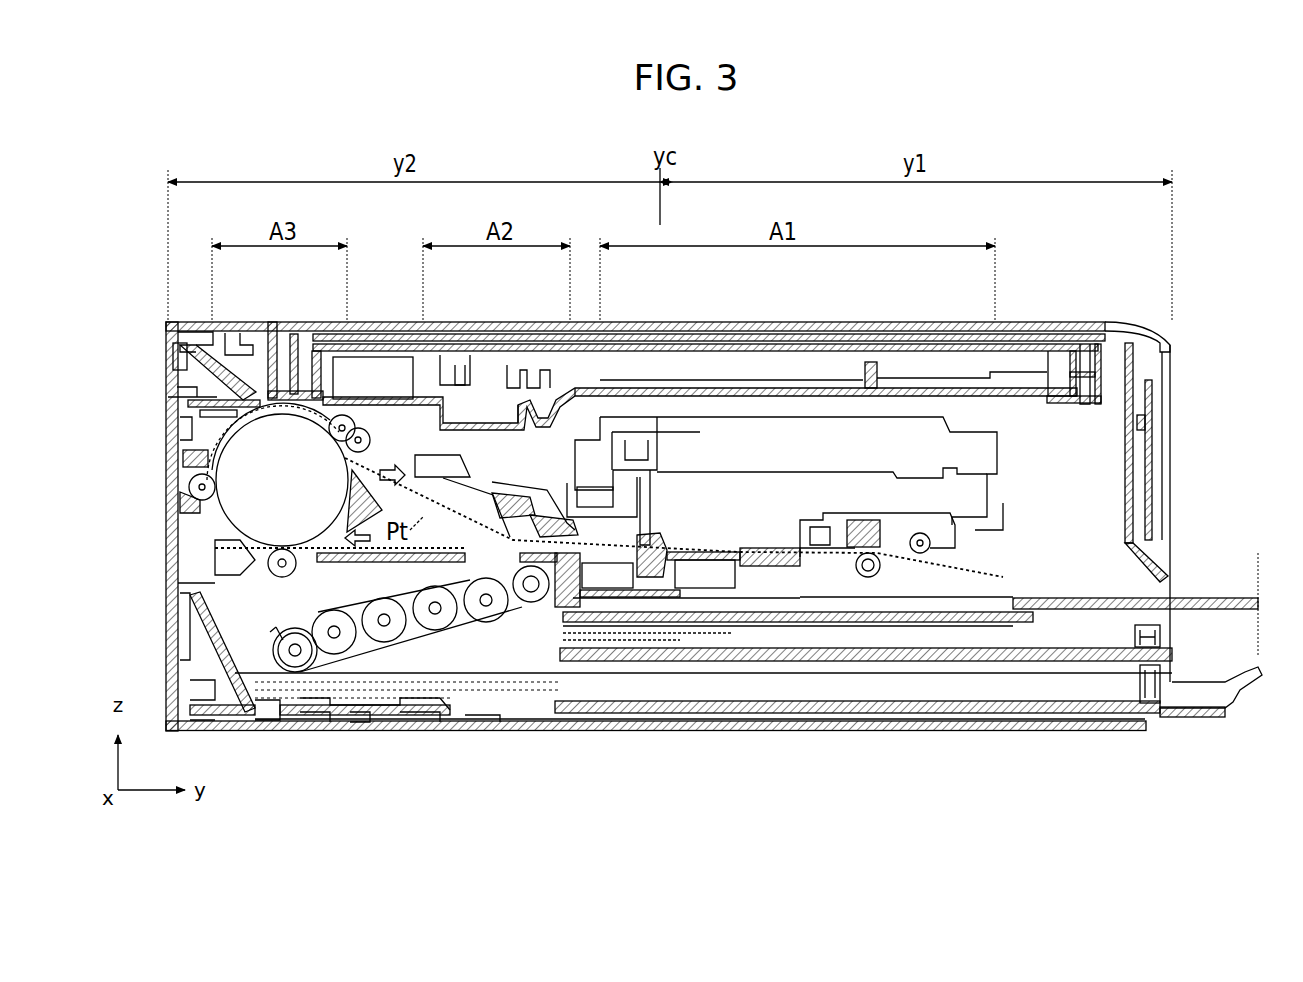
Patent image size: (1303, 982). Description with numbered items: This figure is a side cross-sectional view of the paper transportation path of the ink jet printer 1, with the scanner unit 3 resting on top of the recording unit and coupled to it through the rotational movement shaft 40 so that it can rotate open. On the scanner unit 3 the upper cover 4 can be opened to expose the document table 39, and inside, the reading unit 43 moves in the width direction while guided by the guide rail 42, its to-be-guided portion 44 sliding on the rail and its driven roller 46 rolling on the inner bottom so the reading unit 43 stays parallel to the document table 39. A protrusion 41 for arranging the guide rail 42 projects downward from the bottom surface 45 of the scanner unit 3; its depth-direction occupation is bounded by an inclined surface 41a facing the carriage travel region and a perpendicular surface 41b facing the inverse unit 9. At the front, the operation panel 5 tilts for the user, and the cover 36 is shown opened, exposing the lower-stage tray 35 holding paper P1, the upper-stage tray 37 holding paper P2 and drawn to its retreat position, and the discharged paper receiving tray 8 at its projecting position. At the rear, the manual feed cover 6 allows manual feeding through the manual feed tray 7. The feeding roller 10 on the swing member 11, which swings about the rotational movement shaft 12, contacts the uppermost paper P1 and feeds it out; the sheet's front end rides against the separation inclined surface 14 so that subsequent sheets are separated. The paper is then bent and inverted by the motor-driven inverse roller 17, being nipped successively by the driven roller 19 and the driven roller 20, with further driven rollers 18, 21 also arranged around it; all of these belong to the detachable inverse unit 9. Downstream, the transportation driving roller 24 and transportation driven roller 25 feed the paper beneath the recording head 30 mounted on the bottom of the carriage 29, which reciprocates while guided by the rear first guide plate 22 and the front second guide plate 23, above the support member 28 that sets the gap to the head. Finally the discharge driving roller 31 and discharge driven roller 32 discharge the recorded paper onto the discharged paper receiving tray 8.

The printer 1 is at (809, 132).
The scanner unit 3 is at (900, 318).
The upper cover 4 is at (1085, 324).
The operation panel 5 is at (1172, 432).
The manual feed cover 6 is at (205, 330).
The manual feed tray 7 is at (172, 332).
The discharged paper receiving tray 8 is at (1228, 596).
The inverse unit 9 is at (152, 503).
The feeding roller 10 is at (310, 672).
The swing member 11 is at (386, 642).
The rotational movement shaft 12 is at (535, 593).
The separation inclined surface 14 is at (200, 615).
The inverse roller 17 is at (208, 425).
The driven roller 18 is at (268, 565).
The driven roller 19 is at (190, 490).
The driven roller 20 is at (343, 415).
The driven roller 21 is at (362, 428).
The first guide plate 22 is at (600, 486).
The second guide plate 23 is at (1003, 533).
The transportation driving roller 24 is at (622, 490).
The transportation driven roller 25 is at (652, 420).
The support member 28 is at (745, 417).
The carriage 29 is at (790, 380).
The recording head 30 is at (700, 417).
The discharge driving roller 31 is at (882, 572).
The discharge driven roller 32 is at (945, 530).
The lower-stage tray 35 is at (728, 713).
The cover 36 is at (1218, 718).
The upper-stage tray 37 is at (767, 731).
The document table 39 is at (1018, 320).
The rotational movement shaft 40 is at (247, 340).
The protrusion 41 is at (513, 448).
The inclined surface 41a is at (575, 398).
The perpendicular surface 41b is at (430, 400).
The guide rail 42 is at (530, 365).
The reading unit 43 is at (447, 352).
The to-be-guided portion 44 is at (470, 365).
The bottom surface 45 is at (845, 380).
The driven roller 46 is at (880, 365).
The paper P1 is at (517, 688).
The paper P2 is at (653, 665).